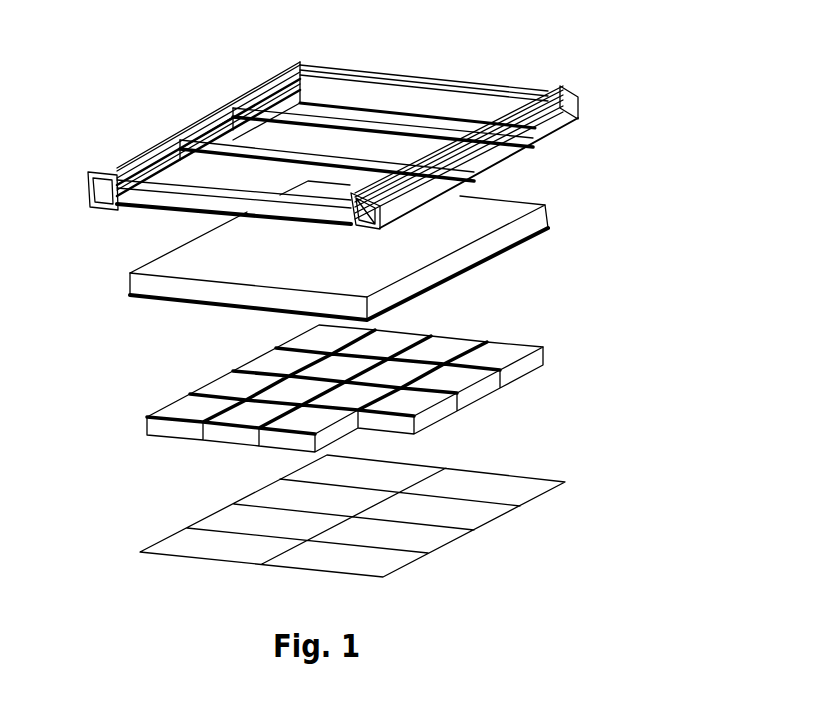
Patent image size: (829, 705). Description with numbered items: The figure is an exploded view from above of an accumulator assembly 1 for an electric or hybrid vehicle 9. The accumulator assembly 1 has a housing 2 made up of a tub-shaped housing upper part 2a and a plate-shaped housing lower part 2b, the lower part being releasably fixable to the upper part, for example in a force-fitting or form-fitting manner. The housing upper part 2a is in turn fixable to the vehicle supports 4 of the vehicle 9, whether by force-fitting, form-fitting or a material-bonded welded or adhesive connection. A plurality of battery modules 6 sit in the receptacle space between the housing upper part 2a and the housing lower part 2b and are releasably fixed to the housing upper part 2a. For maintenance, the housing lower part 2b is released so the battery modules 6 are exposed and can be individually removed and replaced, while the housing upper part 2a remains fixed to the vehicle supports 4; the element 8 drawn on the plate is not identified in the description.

The accumulator assembly 1 is at (129, 258).
The electric or hybrid vehicle 9 is at (430, 59).
The vehicle supports 4 is at (158, 142).
The cover plate 8 is at (339, 250).
The housing 2 is at (616, 308).
The housing upper part 2a is at (535, 222).
The housing lower part 2b is at (498, 488).
The battery modules 6 is at (180, 413).